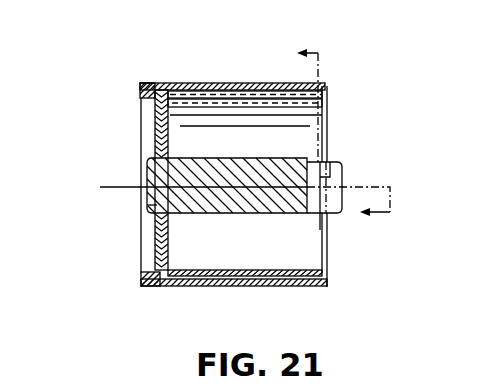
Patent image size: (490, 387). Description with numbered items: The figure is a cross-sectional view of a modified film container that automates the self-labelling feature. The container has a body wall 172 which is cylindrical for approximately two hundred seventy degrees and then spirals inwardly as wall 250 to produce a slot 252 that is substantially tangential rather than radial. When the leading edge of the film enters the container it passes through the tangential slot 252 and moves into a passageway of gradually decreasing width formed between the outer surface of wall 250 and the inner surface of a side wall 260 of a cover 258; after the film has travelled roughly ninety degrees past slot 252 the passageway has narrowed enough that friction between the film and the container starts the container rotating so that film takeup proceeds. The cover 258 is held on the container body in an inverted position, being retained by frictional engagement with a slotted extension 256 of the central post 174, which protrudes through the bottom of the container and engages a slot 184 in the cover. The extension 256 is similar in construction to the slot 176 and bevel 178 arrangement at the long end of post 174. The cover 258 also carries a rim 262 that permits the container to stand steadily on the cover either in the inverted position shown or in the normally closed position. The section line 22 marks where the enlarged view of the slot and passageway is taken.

The section line 22— 22 is at (343, 141).
The body wall 172 is at (330, 96).
The post 174 is at (273, 213).
The slot 176 is at (320, 230).
The bevel 178 is at (342, 160).
The slot 184 is at (157, 211).
The wall 250 is at (330, 103).
The slot 252 is at (330, 99).
The slotted extension 256 is at (147, 172).
The cover 258 is at (150, 83).
The side wall 260 is at (300, 287).
The rim 262 is at (150, 276).